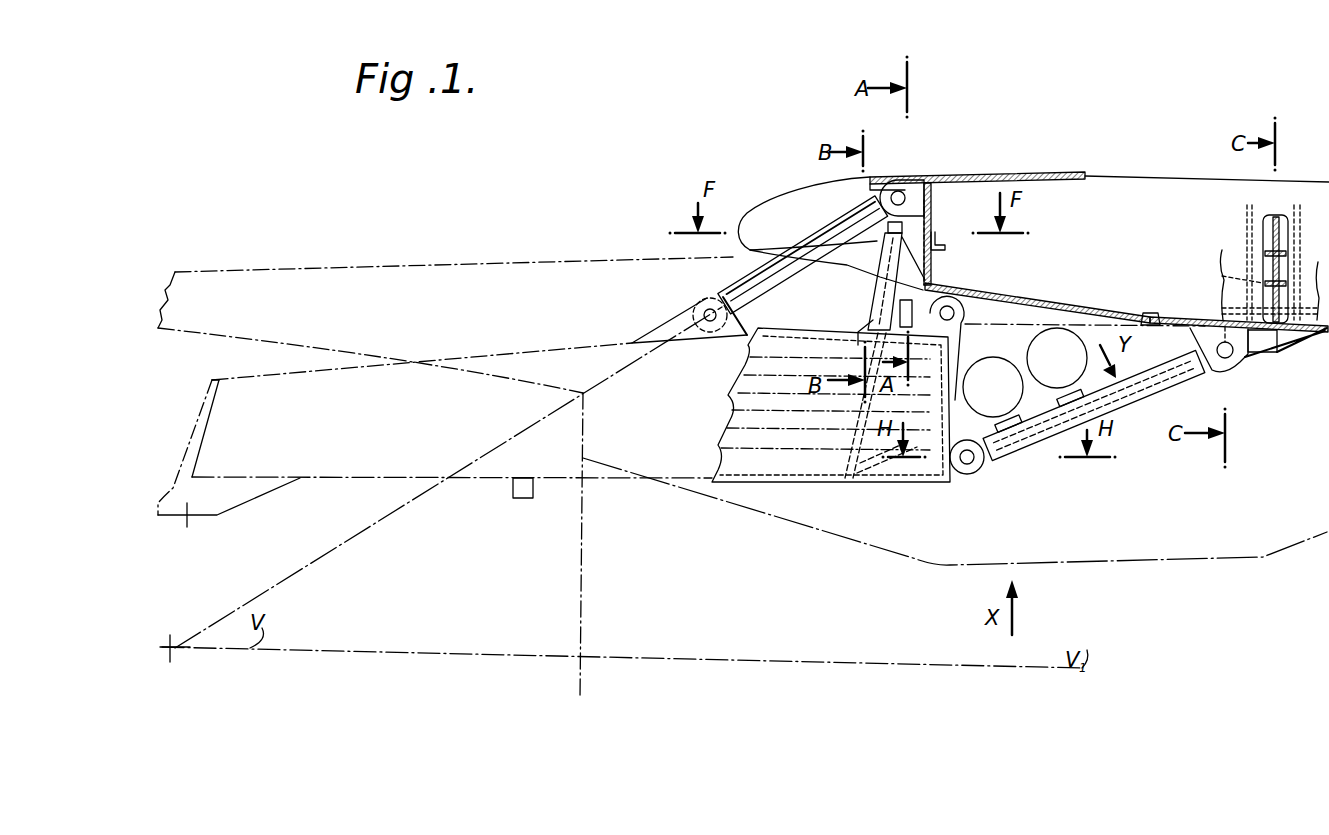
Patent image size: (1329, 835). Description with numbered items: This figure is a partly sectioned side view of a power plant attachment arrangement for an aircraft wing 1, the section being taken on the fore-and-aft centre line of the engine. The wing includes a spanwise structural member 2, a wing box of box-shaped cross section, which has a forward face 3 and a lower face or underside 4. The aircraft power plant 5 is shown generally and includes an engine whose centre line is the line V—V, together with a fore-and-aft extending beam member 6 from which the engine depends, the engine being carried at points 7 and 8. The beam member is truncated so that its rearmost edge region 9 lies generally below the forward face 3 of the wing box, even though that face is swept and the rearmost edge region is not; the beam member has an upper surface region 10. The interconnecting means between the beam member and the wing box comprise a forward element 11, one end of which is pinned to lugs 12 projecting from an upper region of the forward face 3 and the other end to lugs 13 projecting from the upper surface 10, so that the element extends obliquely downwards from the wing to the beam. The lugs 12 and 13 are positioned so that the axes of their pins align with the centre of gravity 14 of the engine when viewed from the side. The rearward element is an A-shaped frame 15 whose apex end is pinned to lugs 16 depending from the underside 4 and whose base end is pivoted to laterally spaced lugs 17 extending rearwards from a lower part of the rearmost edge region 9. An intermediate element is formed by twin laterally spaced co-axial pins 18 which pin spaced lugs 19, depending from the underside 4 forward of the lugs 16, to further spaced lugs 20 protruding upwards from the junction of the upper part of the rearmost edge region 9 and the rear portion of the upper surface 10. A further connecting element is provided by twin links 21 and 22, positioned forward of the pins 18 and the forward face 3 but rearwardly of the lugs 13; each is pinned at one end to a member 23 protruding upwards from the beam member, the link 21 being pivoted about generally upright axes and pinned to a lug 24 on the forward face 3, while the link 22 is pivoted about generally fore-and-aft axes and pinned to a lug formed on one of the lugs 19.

The aircraft wing 1 is at (763, 197).
The spanwise structural member 2 is at (1047, 172).
The forward face 3 is at (930, 183).
The lower face or underside 4 is at (1153, 323).
The aircraft power plant 5 is at (205, 391).
The beam member 6 is at (487, 478).
The engine carrying point 7 is at (192, 513).
The engine carrying point 8 is at (522, 500).
The rearmost edge region 9 is at (963, 392).
The upper surface region 10 is at (527, 352).
The forward element 11 is at (752, 278).
The lugs 12 is at (890, 186).
The lugs 13 is at (667, 320).
The centre of gravity 14 is at (178, 645).
The A-shaped frame 15 is at (1185, 372).
The lugs 16 is at (1262, 350).
The lugs 17 is at (957, 470).
The co-axial pins 18 is at (1012, 297).
The lugs 19 is at (1032, 300).
The lugs 20 is at (957, 323).
The link 21 is at (923, 227).
The link 22 is at (940, 289).
The member 23 is at (860, 303).
The lug 24 is at (940, 236).